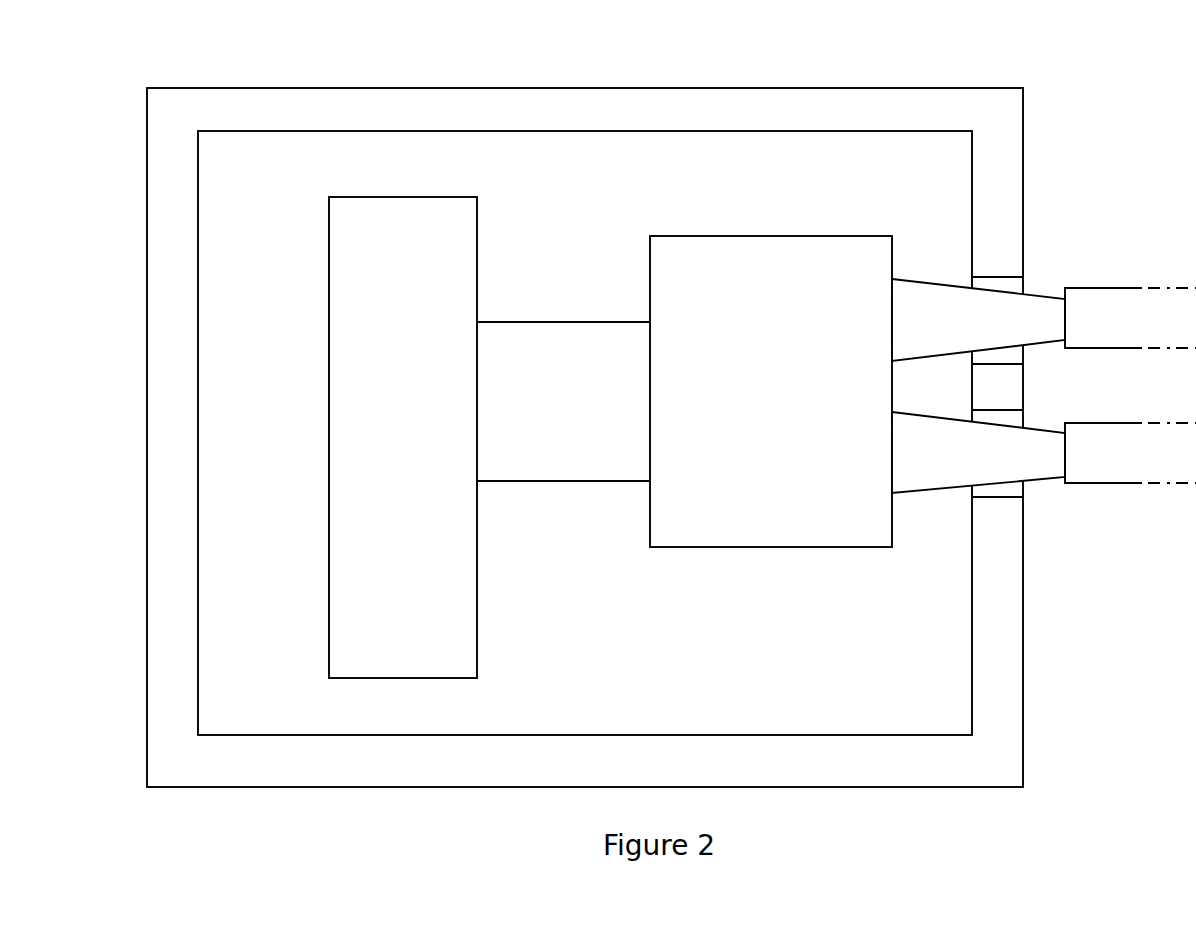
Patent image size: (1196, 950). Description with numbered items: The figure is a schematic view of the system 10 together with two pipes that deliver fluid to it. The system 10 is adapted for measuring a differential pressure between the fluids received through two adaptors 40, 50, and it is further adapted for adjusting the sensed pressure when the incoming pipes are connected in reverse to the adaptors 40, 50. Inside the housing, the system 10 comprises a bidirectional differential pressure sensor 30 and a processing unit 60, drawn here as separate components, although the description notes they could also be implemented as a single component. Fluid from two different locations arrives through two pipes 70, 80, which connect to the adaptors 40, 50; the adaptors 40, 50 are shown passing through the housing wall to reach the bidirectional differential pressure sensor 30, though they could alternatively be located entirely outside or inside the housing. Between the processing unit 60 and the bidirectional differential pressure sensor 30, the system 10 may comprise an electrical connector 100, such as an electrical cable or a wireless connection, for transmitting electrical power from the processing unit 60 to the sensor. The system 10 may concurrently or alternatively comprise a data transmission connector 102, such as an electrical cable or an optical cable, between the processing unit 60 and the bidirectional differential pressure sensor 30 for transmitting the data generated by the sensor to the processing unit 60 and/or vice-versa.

The system 10 is at (264, 43).
The bidirectional differential pressure sensor 30 is at (764, 517).
The adaptor 40 is at (960, 329).
The adaptor 50 is at (957, 461).
The processing unit 60 is at (393, 657).
The pipe 70 is at (1129, 329).
The pipe 80 is at (1129, 461).
The electrical connector 100 is at (575, 322).
The data transmission connector 102 is at (585, 481).